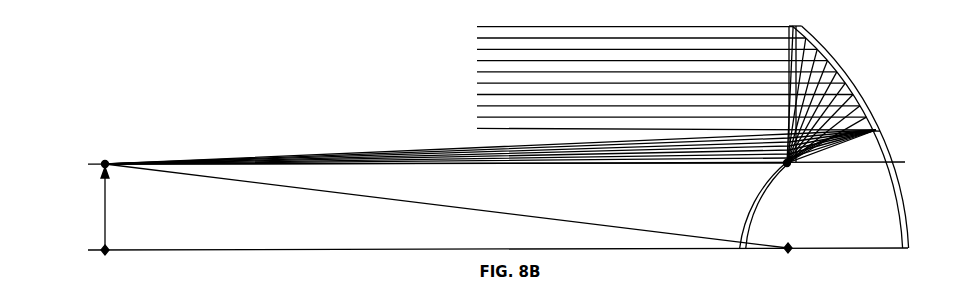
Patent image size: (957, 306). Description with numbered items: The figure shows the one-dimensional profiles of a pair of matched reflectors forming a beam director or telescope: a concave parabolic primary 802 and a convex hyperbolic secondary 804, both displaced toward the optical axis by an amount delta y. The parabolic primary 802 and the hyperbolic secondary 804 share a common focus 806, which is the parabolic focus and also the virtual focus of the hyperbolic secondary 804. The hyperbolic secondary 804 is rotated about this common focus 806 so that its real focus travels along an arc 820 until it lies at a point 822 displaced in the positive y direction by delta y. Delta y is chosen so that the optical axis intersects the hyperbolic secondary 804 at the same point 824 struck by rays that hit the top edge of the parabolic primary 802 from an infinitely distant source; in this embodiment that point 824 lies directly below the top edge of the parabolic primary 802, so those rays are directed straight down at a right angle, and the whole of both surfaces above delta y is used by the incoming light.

The parabolic primary CoR 802 is at (838, 75).
The hyperbolic secondary CoR 804 is at (751, 205).
The common focus 806 is at (792, 251).
The arc 820 is at (118, 211).
The point 822 is at (128, 140).
The point 824 is at (789, 166).